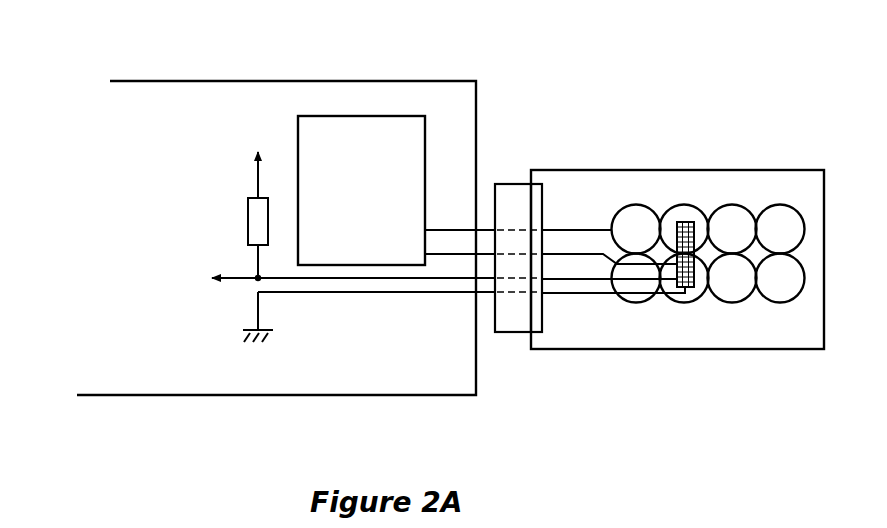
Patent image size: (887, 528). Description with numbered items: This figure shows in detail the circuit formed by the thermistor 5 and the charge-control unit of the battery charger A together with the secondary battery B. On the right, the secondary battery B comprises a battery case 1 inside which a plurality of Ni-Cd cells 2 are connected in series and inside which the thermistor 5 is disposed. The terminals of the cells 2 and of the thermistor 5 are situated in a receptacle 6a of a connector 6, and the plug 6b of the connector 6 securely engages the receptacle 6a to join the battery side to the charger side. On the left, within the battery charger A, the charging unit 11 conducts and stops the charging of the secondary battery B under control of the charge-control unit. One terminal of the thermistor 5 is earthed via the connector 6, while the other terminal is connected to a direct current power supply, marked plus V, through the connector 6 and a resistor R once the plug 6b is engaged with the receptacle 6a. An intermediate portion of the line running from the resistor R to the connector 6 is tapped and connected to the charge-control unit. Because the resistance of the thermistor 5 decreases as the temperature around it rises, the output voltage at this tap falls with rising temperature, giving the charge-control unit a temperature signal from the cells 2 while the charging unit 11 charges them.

The battery charger A is at (401, 79).
The secondary battery B is at (580, 167).
The charging unit 11 is at (425, 160).
The resistor R is at (248, 226).
The connector 6 is at (541, 334).
The receptacle 6a is at (538, 312).
The plug 6b is at (515, 326).
The battery case 1 is at (718, 350).
The Ni-Cd cells 2 is at (638, 217).
The thermistor 5 is at (712, 242).